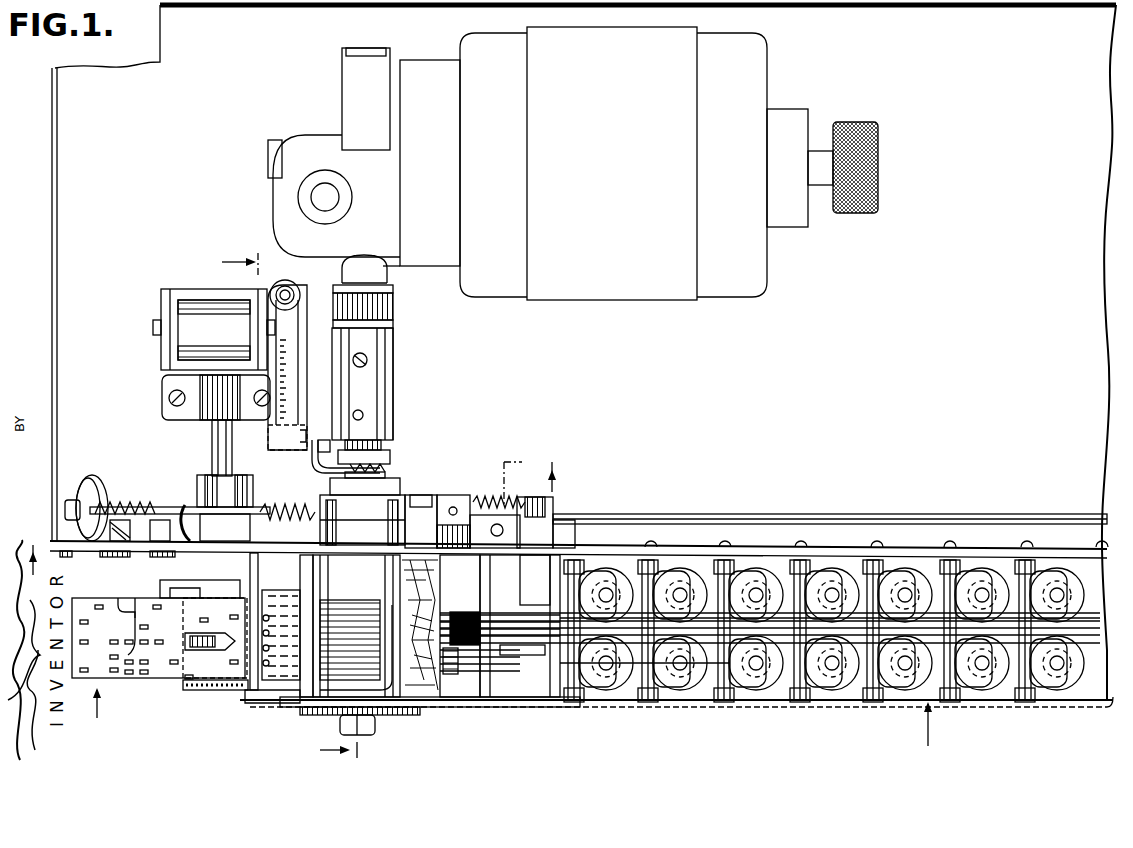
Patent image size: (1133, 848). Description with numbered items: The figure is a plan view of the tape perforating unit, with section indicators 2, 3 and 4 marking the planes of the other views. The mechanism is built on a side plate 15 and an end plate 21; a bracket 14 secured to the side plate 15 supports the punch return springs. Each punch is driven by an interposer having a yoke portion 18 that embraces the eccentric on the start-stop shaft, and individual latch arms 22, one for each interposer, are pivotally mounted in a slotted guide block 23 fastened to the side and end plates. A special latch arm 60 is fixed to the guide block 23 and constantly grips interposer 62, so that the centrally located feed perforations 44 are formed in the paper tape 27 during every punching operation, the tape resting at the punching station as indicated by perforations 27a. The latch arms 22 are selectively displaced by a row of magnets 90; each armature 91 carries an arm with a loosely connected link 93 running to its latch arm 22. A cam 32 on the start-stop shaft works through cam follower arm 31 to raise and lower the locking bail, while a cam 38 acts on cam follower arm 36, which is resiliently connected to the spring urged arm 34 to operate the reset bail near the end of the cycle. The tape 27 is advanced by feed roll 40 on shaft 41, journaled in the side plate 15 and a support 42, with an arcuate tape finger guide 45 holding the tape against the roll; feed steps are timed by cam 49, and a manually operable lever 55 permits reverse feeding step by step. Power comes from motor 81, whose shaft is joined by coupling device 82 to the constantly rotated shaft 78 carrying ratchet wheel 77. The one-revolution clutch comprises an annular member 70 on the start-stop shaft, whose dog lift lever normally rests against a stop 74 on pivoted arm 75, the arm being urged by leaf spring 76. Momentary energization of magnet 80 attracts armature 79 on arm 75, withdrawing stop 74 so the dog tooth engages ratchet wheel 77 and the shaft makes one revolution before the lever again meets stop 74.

The motor 81 is at (573, 163).
The coupling device 82 is at (397, 347).
The constantly rotated shaft 78 is at (356, 432).
The ratchet wheel 77 is at (393, 426).
The annular member 70 is at (388, 450).
The pivoted arm 75 is at (287, 367).
The armature 79 is at (278, 287).
The leaf spring 76 is at (268, 437).
The stop 74 is at (314, 457).
The magnet 80 is at (200, 310).
The support 42 is at (205, 398).
The shaft 41 is at (212, 446).
The manually operable lever 55 is at (188, 508).
The cam 49 is at (306, 503).
The cam 38 is at (375, 505).
The cam 32 is at (408, 520).
The cam follower arm 36 is at (422, 522).
The spring urged arm 34 is at (470, 512).
The cam follower arm 31 is at (510, 535).
The side plate 15 is at (593, 548).
The magnet 90 is at (618, 570).
The armature 91 is at (972, 578).
The link 93 is at (775, 570).
The feed perforations 44 is at (82, 638).
The perforations 27a is at (128, 710).
The paper tape 27 is at (162, 678).
The tape finger guide 45 is at (215, 638).
The feed roll 40 is at (195, 690).
The end plate 21 is at (248, 703).
The bracket 14 is at (281, 625).
The interposer 62 is at (297, 672).
The yoke portion 18 is at (352, 638).
The latch arms 22 is at (448, 612).
The special latch arm 60 is at (488, 652).
The slotted guide block 23 is at (510, 578).
The section line 2- 2 is at (519, 717).
The section line 3- 3 is at (296, 507).
The section line 4- 4 is at (291, 509).